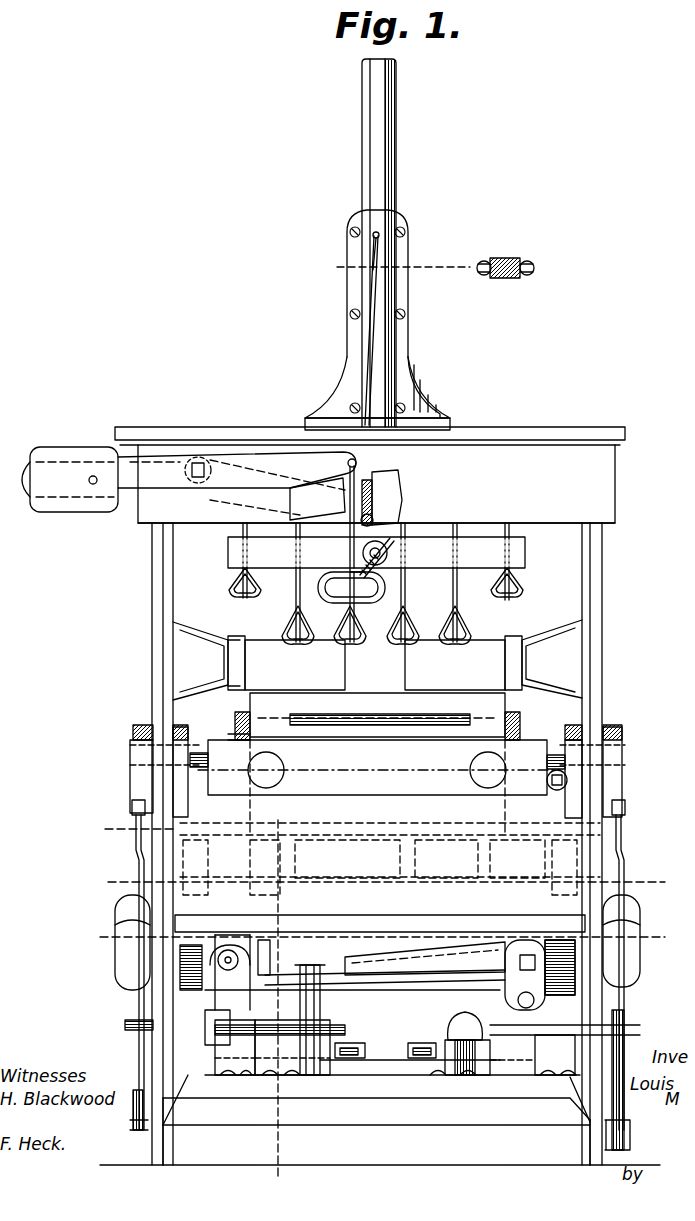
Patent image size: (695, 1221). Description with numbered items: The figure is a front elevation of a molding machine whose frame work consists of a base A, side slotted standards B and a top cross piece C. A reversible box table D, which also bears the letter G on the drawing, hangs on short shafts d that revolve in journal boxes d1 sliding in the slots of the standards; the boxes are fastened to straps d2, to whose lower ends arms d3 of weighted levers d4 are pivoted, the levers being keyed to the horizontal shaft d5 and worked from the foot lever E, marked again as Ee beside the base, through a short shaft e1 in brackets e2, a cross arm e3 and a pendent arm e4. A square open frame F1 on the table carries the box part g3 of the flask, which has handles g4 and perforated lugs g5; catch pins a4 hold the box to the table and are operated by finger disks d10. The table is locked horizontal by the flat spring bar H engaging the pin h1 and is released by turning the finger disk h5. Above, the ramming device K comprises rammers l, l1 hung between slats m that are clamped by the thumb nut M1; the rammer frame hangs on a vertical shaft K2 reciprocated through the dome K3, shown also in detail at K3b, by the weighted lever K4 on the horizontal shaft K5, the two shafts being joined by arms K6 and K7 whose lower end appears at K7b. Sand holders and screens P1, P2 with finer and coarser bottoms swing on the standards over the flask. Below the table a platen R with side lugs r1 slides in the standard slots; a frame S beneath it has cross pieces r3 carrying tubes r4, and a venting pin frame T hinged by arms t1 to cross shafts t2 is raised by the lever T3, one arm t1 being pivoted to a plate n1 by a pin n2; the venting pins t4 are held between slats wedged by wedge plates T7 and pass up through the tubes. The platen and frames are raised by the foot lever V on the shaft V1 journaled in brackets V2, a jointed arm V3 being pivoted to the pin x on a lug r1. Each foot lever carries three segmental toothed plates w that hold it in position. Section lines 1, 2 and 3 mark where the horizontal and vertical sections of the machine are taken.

The vertical shaft K2 is at (372, 168).
The dome K3 is at (398, 245).
The dome (detail) K3b is at (512, 260).
The arm K7 is at (520, 282).
The arm (lower end) K7b is at (388, 488).
The top cross piece C is at (370, 475).
The horizontal shaft K5 is at (196, 482).
The weighted lever K4 is at (241, 509).
The arm K6 is at (317, 499).
The thumb nut M1 is at (362, 556).
The ramming device K is at (525, 553).
The slats m is at (228, 553).
The rammers l1 is at (240, 592).
The rammer l is at (473, 636).
The side slotted standards B is at (152, 660).
The foot lever E is at (603, 660).
The sand holder and screen P1 is at (262, 648).
The sand holder and screen P2 is at (503, 640).
The box part of flask g3 is at (288, 700).
The handles g4 is at (368, 712).
The perforated lugs g5 is at (237, 735).
The catch pins a4 is at (238, 732).
The square open frame F1 is at (520, 735).
The carriage G is at (379, 786).
The reversible box table D is at (392, 770).
The finger disk d10 is at (248, 765).
The finger disk h5 is at (477, 765).
The pin h1 is at (546, 772).
The flat spring bar H is at (555, 790).
The short shafts d is at (188, 760).
The journal boxes d1 is at (558, 728).
The straps d2 is at (634, 735).
The weighted lever d4 is at (646, 958).
The horizontal rotating shaft d5 is at (124, 1026).
The arm d3 is at (620, 1075).
The section line 1 is at (387, 882).
The section line 2 is at (186, 1007).
The section line 3 is at (382, 937).
The platen R is at (324, 920).
The side lugs r1 is at (222, 940).
The arms t1 is at (240, 962).
The pin x is at (220, 984).
The cross rotating shafts t2 is at (265, 945).
The tubes r4 is at (350, 930).
The frame S is at (355, 975).
The lever T3 is at (435, 955).
The plate n1 is at (552, 945).
The pin n2 is at (536, 1000).
The cross pieces r3 is at (390, 980).
The jointed arm V3 is at (213, 1024).
The venting pins t4 is at (272, 1030).
The foot lever V is at (315, 975).
The shaft V1 is at (300, 1035).
The brackets V2 is at (214, 1054).
The wedge plates T7 is at (385, 1036).
The venting pin frame T is at (392, 1049).
The short rotating horizontal shaft e1 is at (628, 1022).
The brackets e2 is at (510, 1055).
The cross arm e3 is at (632, 1132).
The pendent arm e4 is at (612, 1113).
The foot lever Ee is at (455, 1075).
The segmental toothed plates w is at (432, 1088).
The base A is at (380, 1120).